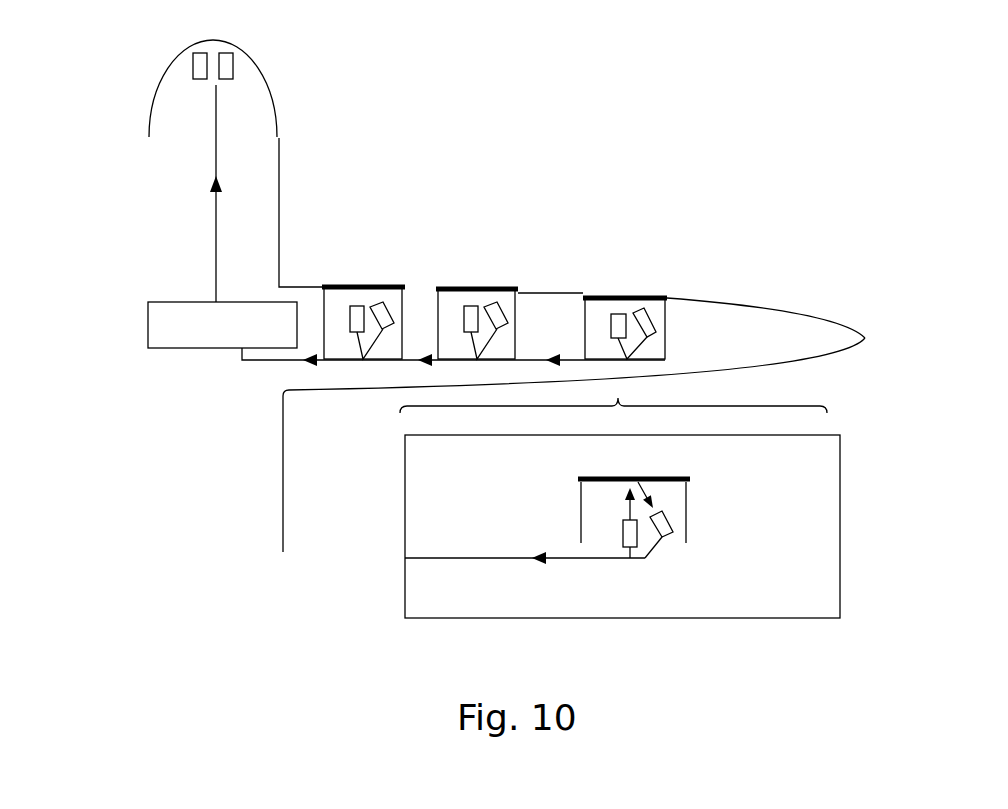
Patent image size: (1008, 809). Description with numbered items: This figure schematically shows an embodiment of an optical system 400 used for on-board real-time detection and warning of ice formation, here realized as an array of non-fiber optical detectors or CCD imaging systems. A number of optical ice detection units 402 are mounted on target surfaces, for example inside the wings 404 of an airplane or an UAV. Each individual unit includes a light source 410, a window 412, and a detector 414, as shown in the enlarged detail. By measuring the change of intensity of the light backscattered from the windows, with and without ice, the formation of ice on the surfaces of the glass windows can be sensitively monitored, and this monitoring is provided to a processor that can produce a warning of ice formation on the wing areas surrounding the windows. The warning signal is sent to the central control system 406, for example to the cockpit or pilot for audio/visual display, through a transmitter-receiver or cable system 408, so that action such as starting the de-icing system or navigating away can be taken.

The optical system 400 is at (190, 251).
The optical ice detection unit 402 is at (585, 327).
The wing 404 is at (763, 317).
The central control system 406 is at (235, 72).
The transmitter-receiver or cable system 408 is at (148, 340).
The light source 410 is at (622, 524).
The window 412 is at (477, 289).
The detector 414 is at (673, 530).